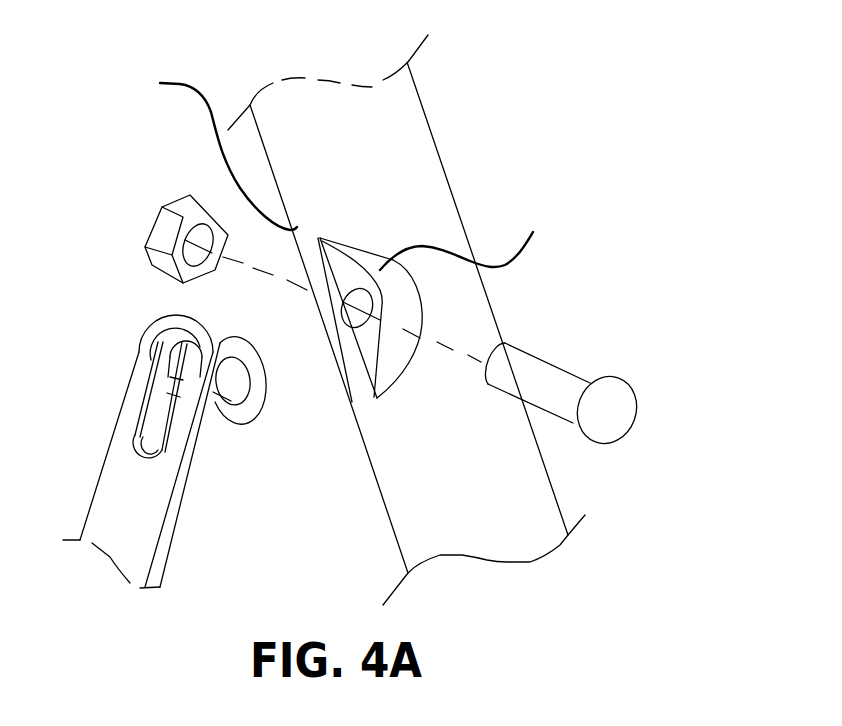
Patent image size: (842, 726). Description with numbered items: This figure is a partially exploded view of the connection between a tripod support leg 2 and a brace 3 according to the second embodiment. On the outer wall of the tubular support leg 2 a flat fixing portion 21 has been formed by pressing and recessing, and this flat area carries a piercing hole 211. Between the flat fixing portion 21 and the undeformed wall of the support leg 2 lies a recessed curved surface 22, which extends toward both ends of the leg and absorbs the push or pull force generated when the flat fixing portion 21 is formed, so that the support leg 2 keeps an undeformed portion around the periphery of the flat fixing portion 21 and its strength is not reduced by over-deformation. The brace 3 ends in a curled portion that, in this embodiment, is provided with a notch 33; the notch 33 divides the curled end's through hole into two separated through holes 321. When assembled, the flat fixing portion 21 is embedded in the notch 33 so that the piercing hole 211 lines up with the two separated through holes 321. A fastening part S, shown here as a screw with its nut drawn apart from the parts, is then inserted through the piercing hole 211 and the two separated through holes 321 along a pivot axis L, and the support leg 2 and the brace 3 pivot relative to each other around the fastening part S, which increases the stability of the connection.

The support leg 2 is at (465, 227).
The flat fixing portion 21 is at (333, 272).
The piercing hole 211 is at (353, 317).
The recessed curved surface 22 is at (345, 170).
The pivot axis L is at (453, 350).
The fastening part S is at (613, 400).
The brace 3 is at (97, 480).
The notch 33 is at (152, 435).
The separated through holes 321 is at (185, 351).